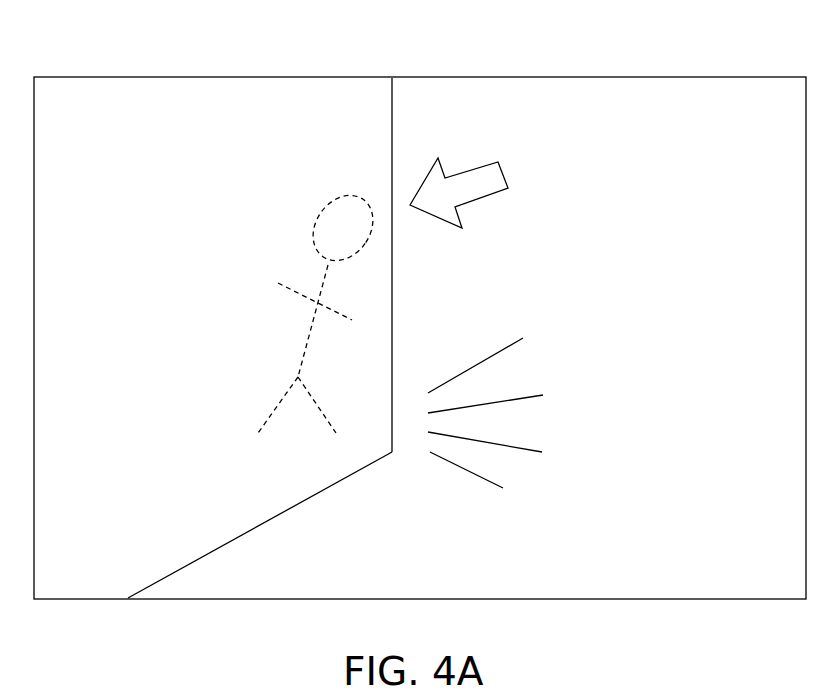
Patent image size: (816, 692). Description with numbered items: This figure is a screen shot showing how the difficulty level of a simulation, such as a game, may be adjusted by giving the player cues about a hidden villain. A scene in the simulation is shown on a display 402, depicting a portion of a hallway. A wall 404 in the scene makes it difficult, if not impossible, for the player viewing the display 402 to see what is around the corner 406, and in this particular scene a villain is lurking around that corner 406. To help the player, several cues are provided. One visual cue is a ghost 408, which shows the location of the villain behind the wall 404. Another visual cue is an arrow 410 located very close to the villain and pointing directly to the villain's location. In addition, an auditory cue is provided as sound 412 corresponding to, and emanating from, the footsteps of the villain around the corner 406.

The display 402 is at (650, 78).
The wall 404 is at (141, 518).
The corner 406 is at (393, 273).
The ghost 408 is at (320, 203).
The arrow 410 is at (502, 165).
The sound 412 is at (535, 370).